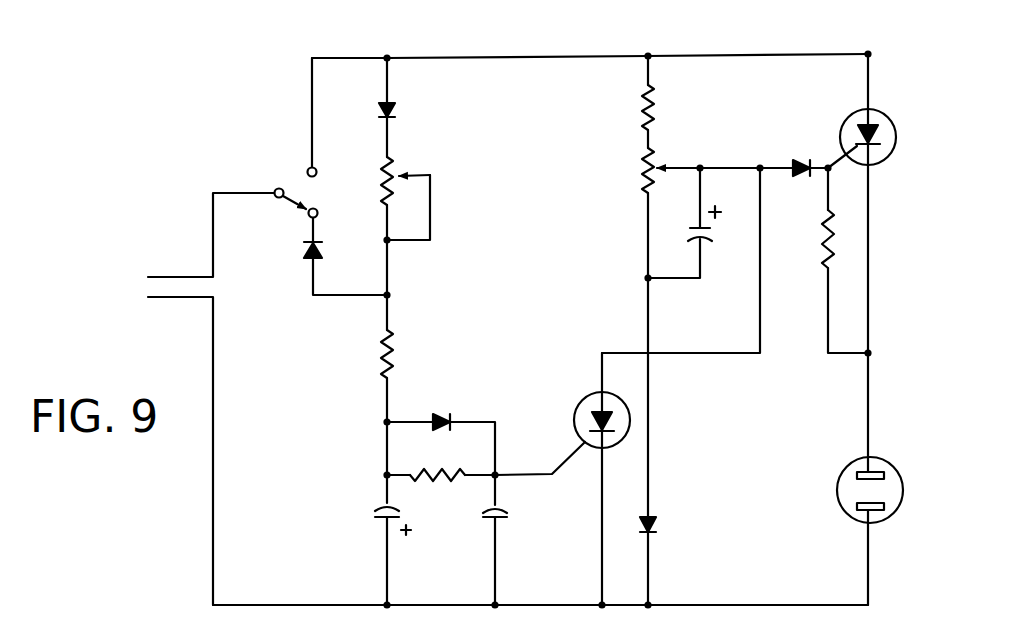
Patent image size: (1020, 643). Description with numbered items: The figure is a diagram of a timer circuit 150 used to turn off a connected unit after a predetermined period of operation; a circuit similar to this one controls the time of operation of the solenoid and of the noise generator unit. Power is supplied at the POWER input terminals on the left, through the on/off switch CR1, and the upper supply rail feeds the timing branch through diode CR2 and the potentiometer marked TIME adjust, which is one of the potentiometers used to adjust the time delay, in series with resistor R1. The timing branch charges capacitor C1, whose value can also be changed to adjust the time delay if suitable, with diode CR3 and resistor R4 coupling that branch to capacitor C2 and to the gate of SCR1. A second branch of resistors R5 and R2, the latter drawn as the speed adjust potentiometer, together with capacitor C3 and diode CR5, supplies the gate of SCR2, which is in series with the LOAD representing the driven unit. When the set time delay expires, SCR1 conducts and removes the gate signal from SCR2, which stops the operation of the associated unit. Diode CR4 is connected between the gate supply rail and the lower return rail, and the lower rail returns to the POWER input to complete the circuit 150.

The circuit 150 is at (477, 38).
The on/off switch and diode CR1 is at (309, 229).
The diode CR2 is at (411, 101).
The diode CR3 is at (440, 409).
The diode CR4 is at (666, 528).
The diode CR5 is at (795, 147).
The resistor R1 is at (366, 352).
The speed adjust potentiometer R2 is at (670, 203).
The resistor R4 is at (441, 493).
The resistor R5 is at (626, 107).
The capacitor C1 is at (380, 509).
The capacitor C2 is at (508, 540).
The capacitor C3 is at (684, 224).
The element SCR1 is at (627, 386).
The element SCR2 is at (828, 263).
The load lamp LOAD is at (883, 517).
The power input POWER is at (165, 399).
The time adjust potentiometer TIME is at (446, 200).